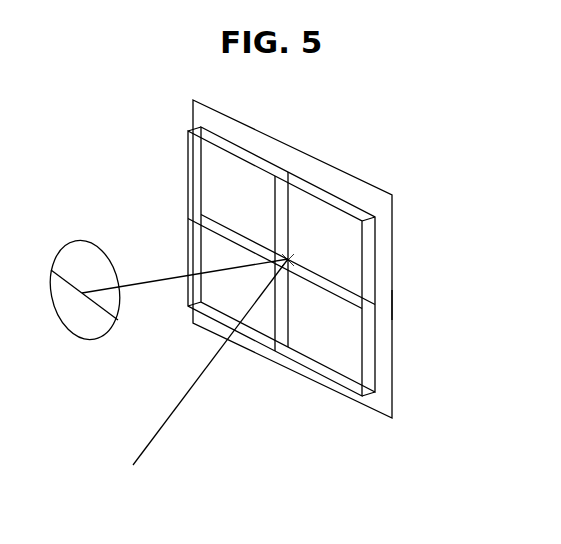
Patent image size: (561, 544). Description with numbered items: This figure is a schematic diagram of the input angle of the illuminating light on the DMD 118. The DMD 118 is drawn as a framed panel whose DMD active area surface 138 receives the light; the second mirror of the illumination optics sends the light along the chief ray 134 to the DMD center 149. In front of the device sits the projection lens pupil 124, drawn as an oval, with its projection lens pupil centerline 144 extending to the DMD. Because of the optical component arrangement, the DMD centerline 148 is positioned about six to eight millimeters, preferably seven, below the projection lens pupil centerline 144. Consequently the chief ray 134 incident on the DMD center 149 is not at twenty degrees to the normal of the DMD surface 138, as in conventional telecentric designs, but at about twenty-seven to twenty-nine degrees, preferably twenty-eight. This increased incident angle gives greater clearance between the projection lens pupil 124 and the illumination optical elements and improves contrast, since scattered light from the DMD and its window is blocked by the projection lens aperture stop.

The DMD 118 is at (343, 173).
The DMD active area surface 138 is at (218, 149).
The DMD center 149 is at (272, 263).
The DMD centerline 148 is at (393, 305).
The projection lens pupil 124 is at (77, 333).
The projection lens pupil centerline 144 is at (110, 330).
The chief ray 134 is at (192, 395).